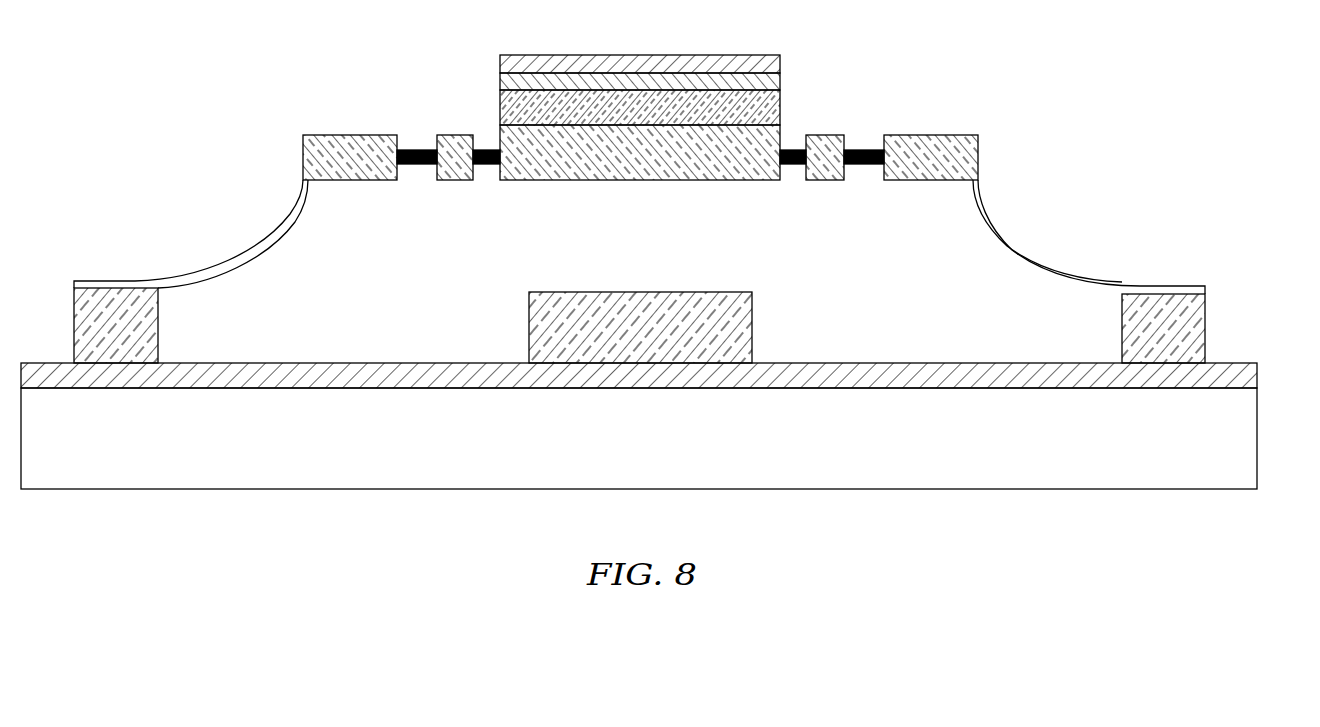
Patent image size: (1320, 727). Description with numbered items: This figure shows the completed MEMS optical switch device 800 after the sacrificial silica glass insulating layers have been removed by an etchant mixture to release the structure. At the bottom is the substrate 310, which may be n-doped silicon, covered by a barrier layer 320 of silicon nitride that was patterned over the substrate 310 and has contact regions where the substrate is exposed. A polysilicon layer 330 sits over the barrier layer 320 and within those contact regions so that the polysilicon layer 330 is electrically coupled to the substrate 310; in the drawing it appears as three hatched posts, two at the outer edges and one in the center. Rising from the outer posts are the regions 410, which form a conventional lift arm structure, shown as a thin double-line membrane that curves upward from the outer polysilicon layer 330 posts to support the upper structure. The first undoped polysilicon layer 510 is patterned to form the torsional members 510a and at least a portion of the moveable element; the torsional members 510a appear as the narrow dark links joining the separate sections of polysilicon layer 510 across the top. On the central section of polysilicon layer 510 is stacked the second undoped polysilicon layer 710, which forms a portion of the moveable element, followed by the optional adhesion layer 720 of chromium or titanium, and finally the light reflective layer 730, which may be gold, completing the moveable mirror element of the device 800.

The substrate 310 is at (653, 459).
The barrier layer 320 is at (1250, 381).
The polysilicon layer 330 is at (128, 346).
The regions 410 is at (212, 270).
The undoped polysilicon layer (poly-1) 510 is at (349, 150).
The torsional members 510a is at (418, 150).
The undoped polysilicon layer (poly-2) 710 is at (780, 100).
The adhesion layer 720 is at (780, 77).
The light reflective layer 730 is at (780, 58).
The device 800 is at (205, 130).